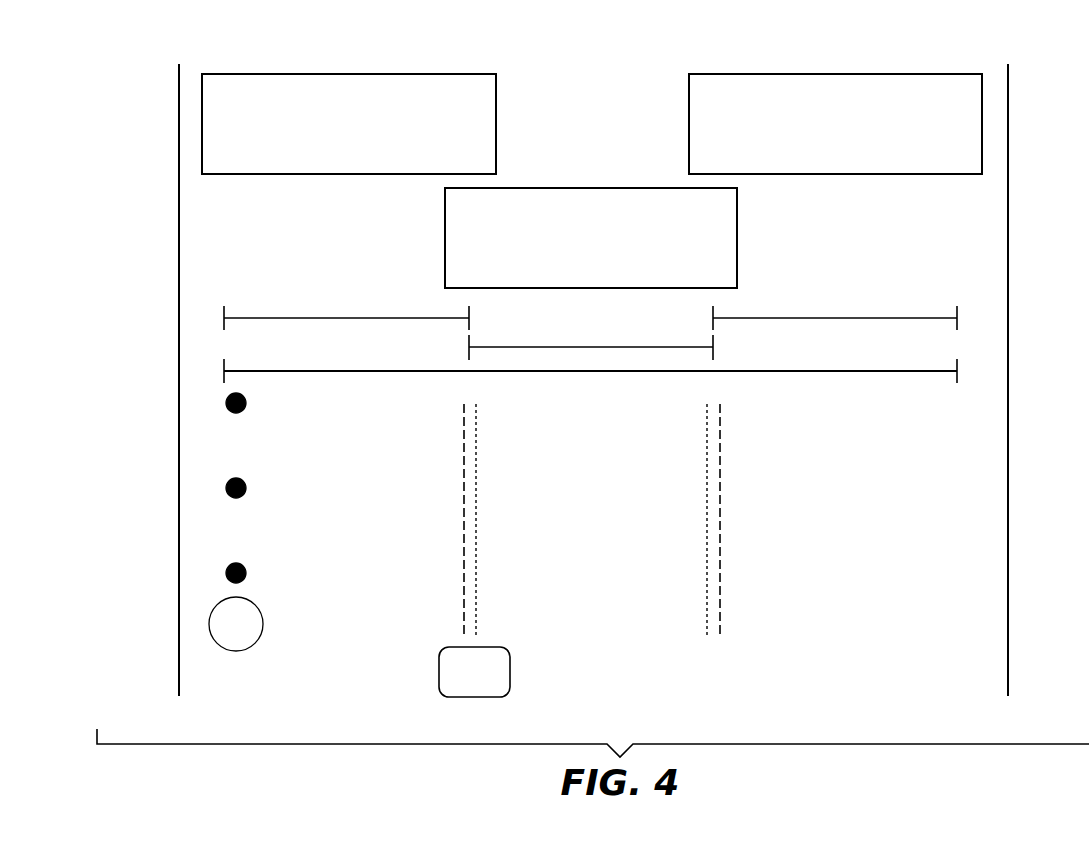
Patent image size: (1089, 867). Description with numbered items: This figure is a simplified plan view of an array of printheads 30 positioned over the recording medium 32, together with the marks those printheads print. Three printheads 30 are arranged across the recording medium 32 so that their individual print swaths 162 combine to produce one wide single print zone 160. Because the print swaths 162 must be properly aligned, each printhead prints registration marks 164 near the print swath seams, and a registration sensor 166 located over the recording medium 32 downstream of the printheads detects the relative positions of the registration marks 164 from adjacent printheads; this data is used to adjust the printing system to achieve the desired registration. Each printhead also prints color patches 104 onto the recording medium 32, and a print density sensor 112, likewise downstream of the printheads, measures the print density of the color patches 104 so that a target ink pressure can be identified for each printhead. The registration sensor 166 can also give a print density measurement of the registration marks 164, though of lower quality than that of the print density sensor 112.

The printhead 30 is at (337, 134).
The recording medium 32 is at (1009, 543).
The color patch 104 is at (247, 402).
The print density sensor 112 is at (219, 634).
The print zone 160 is at (846, 372).
The print swath 162 is at (310, 317).
The registration mark 164 is at (463, 533).
The registration sensor 166 is at (457, 682).